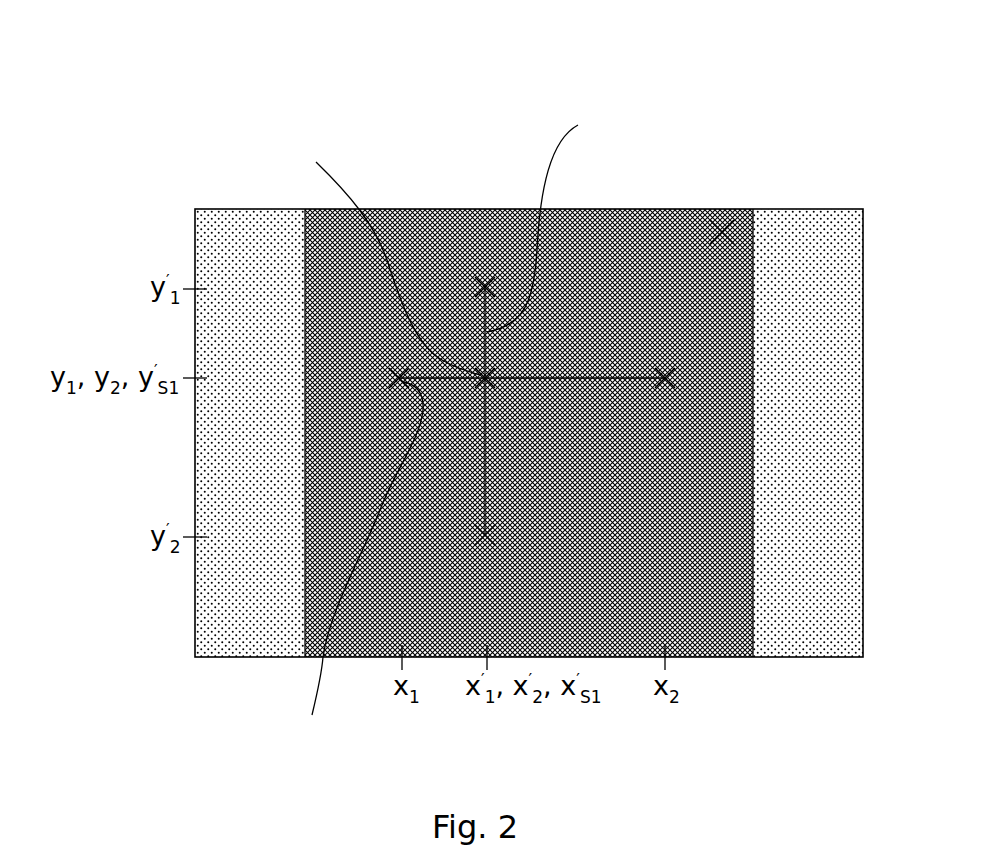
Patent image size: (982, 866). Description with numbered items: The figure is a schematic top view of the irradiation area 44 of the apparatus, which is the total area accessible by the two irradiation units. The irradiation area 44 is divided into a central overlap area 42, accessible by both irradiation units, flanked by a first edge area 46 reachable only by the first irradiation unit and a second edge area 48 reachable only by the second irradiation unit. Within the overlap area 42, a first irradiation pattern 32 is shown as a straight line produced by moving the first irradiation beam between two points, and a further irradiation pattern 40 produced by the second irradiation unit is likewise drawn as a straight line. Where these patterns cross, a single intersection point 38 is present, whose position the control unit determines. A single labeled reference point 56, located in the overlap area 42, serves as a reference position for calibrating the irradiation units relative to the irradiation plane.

The first irradiation pattern 32 is at (360, 566).
The intersection point 38 is at (379, 264).
The further irradiation pattern 40 is at (550, 222).
The overlap area 42 is at (715, 650).
The irradiation area 44 is at (492, 123).
The first edge area 46 is at (765, 607).
The second edge area 48 is at (240, 620).
The reference point 56 is at (724, 226).